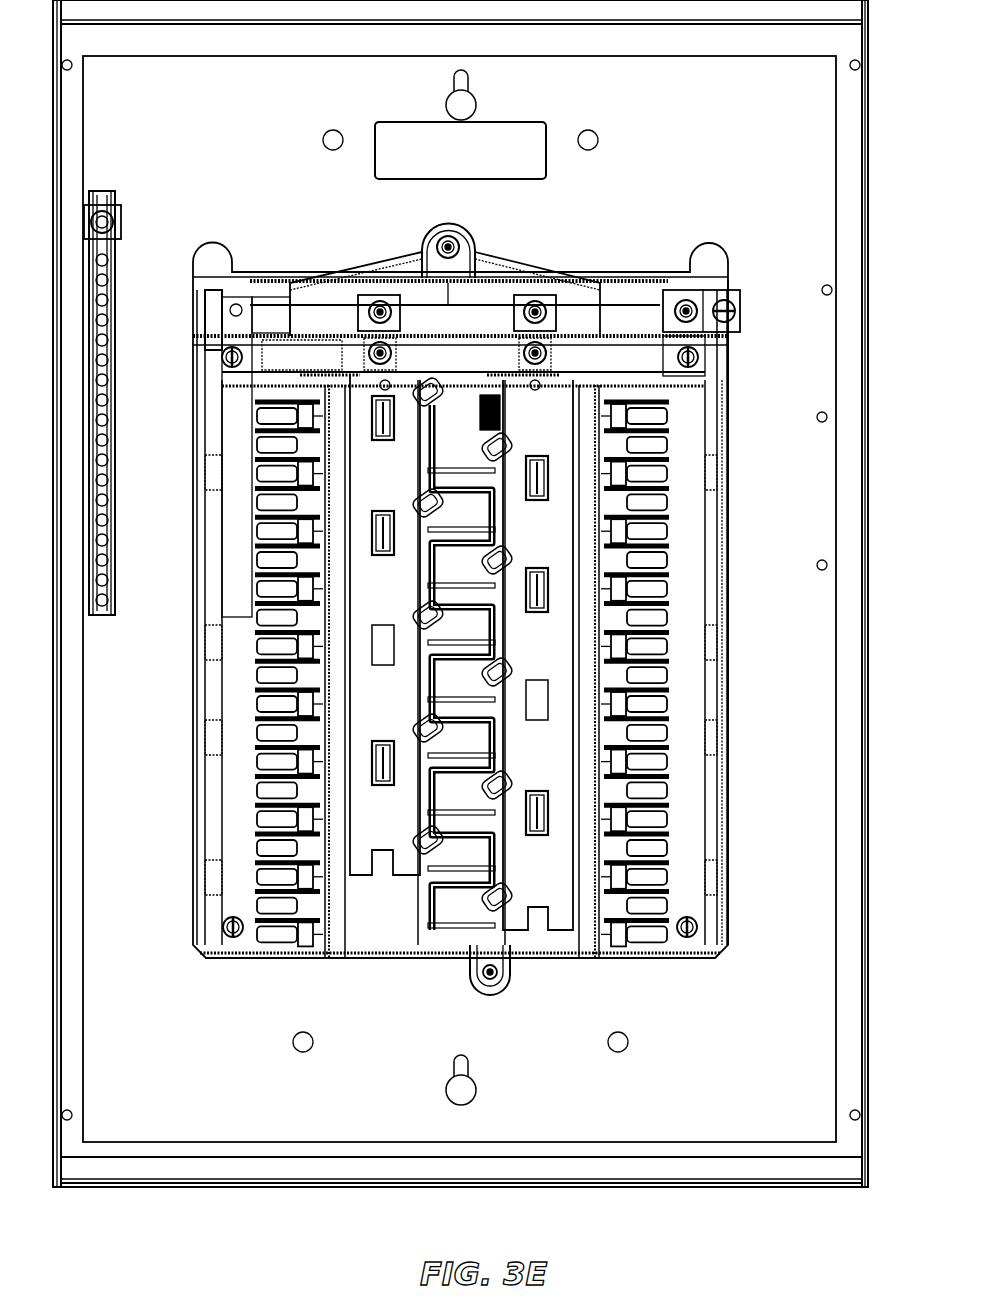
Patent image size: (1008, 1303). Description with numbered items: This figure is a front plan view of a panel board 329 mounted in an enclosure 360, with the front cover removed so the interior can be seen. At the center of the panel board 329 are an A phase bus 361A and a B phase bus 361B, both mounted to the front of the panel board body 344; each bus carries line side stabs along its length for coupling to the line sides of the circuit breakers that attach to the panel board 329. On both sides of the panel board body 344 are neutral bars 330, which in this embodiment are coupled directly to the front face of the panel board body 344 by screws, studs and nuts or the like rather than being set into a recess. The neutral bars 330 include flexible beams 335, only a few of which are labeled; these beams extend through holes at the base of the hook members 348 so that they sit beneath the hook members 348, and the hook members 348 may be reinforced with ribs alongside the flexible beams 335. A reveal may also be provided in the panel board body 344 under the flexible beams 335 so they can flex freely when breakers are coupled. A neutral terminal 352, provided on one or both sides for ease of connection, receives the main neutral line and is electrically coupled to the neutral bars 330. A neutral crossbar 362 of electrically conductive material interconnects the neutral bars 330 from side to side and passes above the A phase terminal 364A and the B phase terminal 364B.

The panel board 329 is at (572, 256).
The neutral bars 330 is at (222, 630).
The flexible beams 335 is at (252, 442).
The panel board body 344 is at (730, 855).
The hook members 348 is at (262, 535).
The neutral terminal 352 is at (732, 292).
The enclosure 360 is at (708, 1187).
The A phase bus 361A is at (358, 880).
The B phase bus 361B is at (558, 925).
The neutral crossbar 362 is at (300, 330).
The A phase terminal 364A is at (375, 300).
The B phase terminal 364B is at (535, 298).